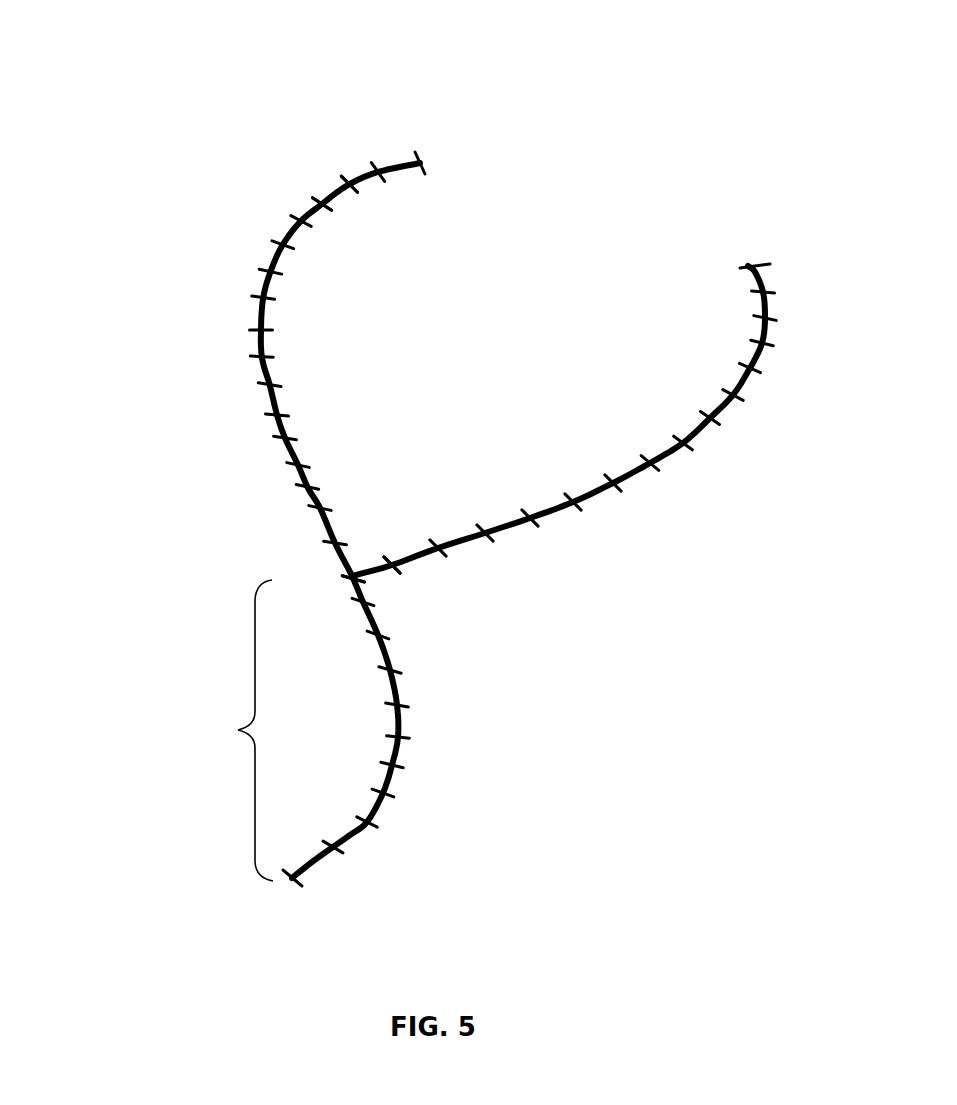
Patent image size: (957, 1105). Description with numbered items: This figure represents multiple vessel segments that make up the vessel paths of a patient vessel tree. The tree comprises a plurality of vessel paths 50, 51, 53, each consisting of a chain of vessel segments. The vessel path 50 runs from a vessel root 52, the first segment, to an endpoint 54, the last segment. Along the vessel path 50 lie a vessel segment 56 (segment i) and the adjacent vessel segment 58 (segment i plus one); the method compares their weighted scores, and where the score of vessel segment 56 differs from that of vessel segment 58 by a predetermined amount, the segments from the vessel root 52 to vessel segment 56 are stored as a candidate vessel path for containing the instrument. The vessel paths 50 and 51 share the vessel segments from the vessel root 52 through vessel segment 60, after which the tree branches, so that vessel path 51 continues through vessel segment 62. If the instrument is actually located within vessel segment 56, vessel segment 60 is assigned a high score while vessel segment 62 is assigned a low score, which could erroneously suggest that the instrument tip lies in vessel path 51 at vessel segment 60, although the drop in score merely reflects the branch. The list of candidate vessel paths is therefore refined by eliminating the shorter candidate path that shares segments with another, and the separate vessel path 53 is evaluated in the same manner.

The vessel path 50 is at (149, 153).
The vessel path 51 is at (230, 730).
The vessel root 52 is at (338, 874).
The vessel path 53 is at (854, 296).
The endpoint 54 is at (396, 145).
The vessel segment i 56 is at (334, 225).
The vessel segment i+1 58 is at (366, 199).
The vessel segment 60 is at (378, 590).
The vessel segment 62 is at (376, 550).